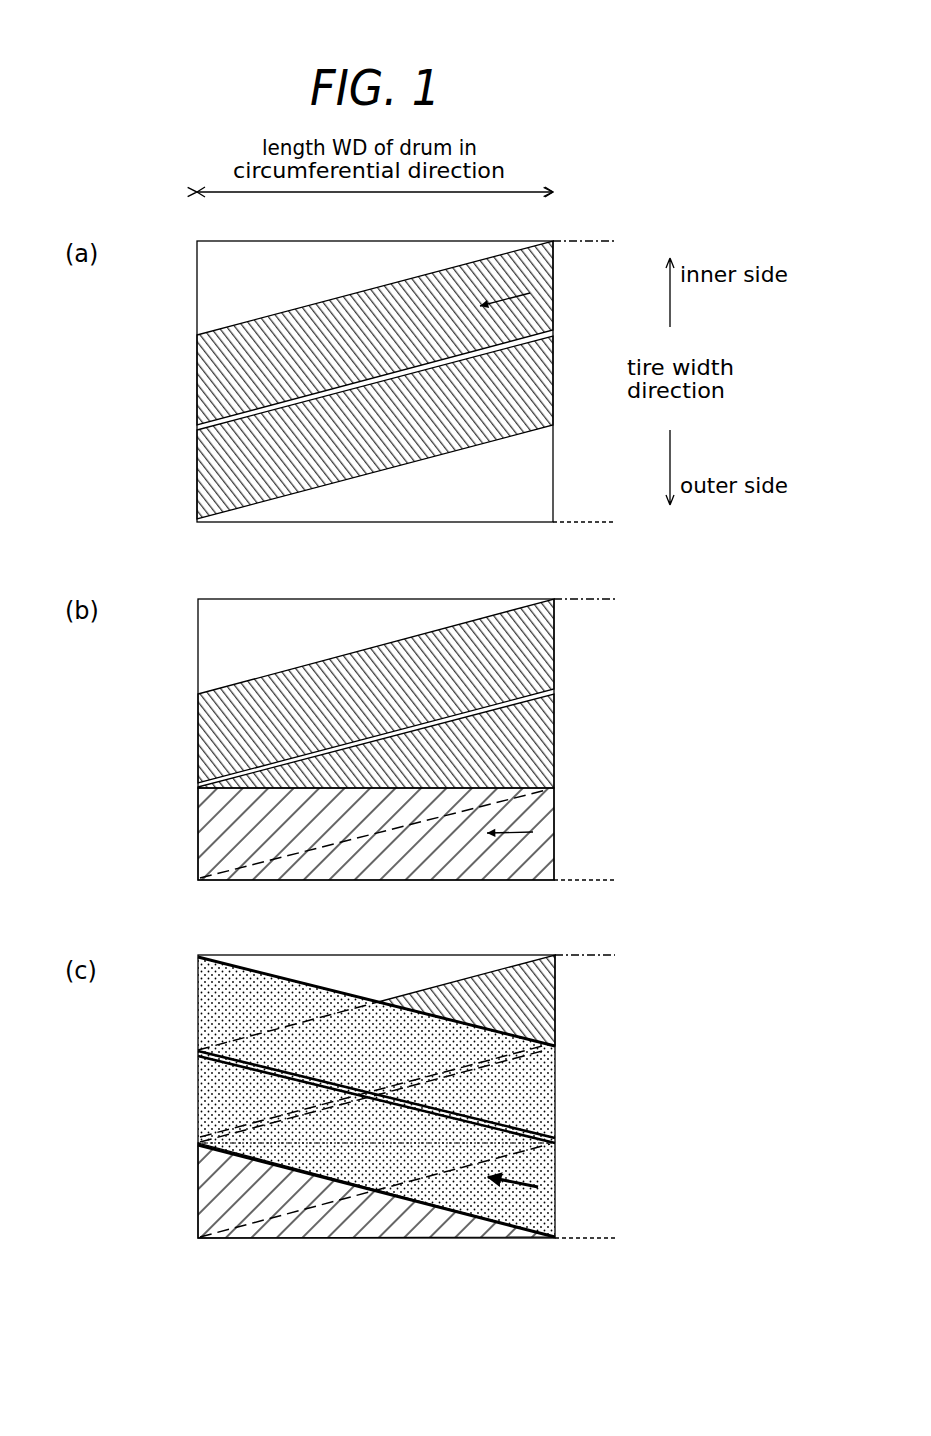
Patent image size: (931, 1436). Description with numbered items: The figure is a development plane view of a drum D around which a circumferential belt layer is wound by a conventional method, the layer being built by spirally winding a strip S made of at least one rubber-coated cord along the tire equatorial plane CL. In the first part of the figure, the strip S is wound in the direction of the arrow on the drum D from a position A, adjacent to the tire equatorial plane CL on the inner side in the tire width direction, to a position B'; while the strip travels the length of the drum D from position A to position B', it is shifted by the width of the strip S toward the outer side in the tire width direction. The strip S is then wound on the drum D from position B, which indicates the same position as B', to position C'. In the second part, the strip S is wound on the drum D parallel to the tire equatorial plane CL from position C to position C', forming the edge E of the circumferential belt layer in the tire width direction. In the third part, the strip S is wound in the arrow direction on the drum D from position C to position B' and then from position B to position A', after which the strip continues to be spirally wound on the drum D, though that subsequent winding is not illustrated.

The drum D is at (278, 239).
The strip S is at (445, 267).
The tire equatorial plane CL is at (599, 596).
The edge E is at (595, 879).
The position A is at (578, 647).
The position B is at (578, 736).
The position C is at (578, 828).
The position A' is at (167, 647).
The position B' is at (167, 736).
The position C' is at (167, 828).